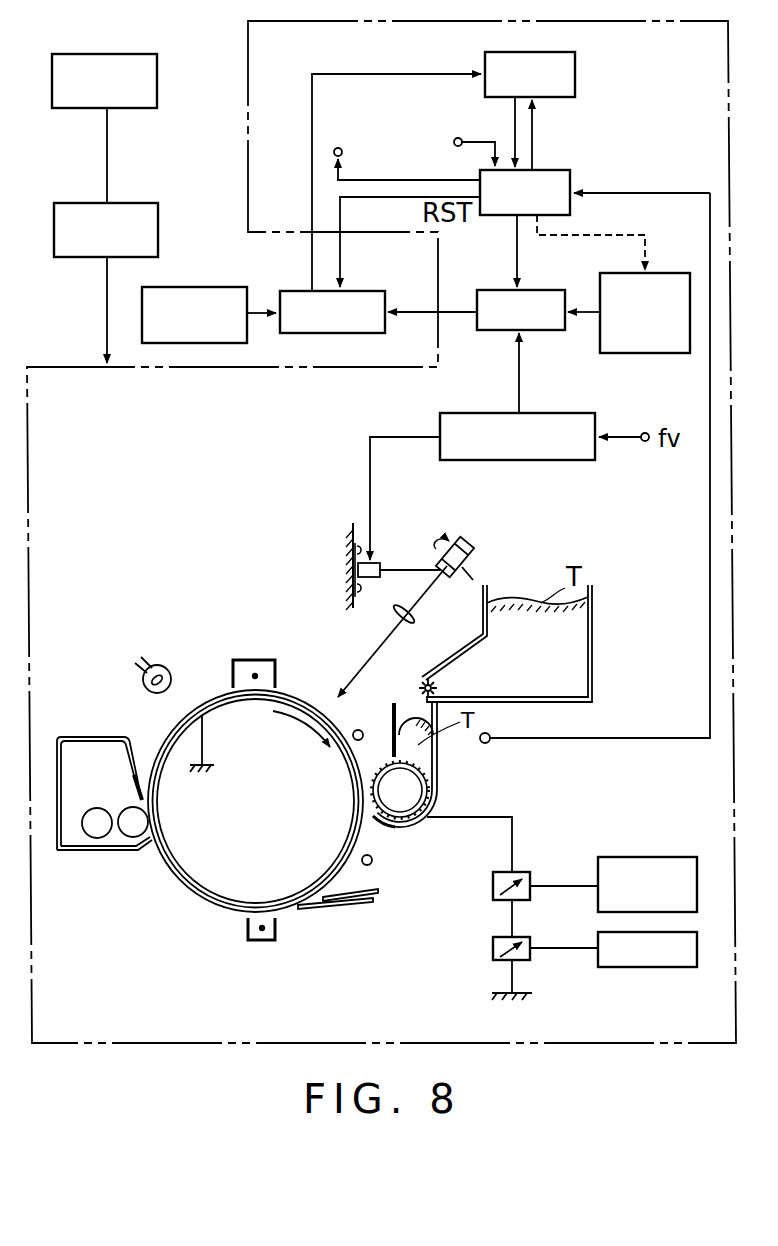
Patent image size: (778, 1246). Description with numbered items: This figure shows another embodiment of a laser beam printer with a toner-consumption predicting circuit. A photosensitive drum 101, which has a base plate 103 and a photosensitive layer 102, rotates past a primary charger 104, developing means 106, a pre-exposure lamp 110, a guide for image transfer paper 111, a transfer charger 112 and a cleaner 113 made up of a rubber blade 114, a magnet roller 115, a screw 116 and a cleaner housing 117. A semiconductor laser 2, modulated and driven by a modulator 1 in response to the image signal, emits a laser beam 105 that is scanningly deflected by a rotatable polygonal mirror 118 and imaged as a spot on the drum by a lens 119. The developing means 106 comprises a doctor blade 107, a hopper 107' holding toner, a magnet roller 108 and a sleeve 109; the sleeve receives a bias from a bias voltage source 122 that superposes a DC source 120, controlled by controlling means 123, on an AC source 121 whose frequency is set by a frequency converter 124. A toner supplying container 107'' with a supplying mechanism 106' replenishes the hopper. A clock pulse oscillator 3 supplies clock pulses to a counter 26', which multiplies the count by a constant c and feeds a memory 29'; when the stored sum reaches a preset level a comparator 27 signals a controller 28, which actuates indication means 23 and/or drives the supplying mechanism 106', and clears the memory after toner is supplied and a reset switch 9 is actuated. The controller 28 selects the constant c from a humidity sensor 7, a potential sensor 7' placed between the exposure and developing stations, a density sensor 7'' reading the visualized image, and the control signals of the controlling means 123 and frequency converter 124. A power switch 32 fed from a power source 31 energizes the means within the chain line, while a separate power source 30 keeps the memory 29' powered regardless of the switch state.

The modulator 1 is at (550, 398).
The semiconductor laser 2 is at (378, 563).
The clock pulse oscillator 3 is at (665, 273).
The humidity sensor 7 is at (512, 723).
The potential sensor 7' is at (336, 767).
The density sensor 7'' is at (394, 879).
The reset switch 9 is at (456, 138).
The indication means 23 is at (340, 146).
The counter 26' is at (540, 289).
The comparator 27 is at (577, 58).
The controller 28 is at (560, 170).
The memory 29' is at (348, 286).
The power source 30 is at (197, 287).
The power source 31 is at (130, 54).
The power switch 32 is at (130, 203).
The photosensitive drum 101 is at (218, 691).
The photoconductive layer 102 is at (292, 693).
The base plate 103 is at (310, 701).
The primary charger 104 is at (255, 660).
The laser beam 105 is at (378, 650).
The developing means 106 is at (453, 791).
The supplying mechanism 106' is at (476, 681).
The doctor blade 107 is at (381, 718).
The hopper 107' is at (454, 765).
The toner supplying container 107'' is at (555, 643).
The magnet roller 108 is at (400, 805).
The sleeve 109 is at (418, 828).
The pre-exposure lamp 110 is at (167, 665).
The guide for image transfer paper 111 is at (380, 903).
The transfer charger 112 is at (260, 942).
The cleaner housing 113 is at (90, 735).
The rubber blade 114 is at (135, 792).
The magnet roller 115 is at (135, 837).
The screw 116 is at (97, 838).
The cleaner housing 117 is at (110, 809).
The rotatable polygonal mirror 118 is at (473, 547).
The lens 119 is at (415, 614).
The DC source 120 is at (541, 932).
The AC source 121 is at (527, 872).
The bias voltage source 122 is at (509, 893).
The controlling means 123 is at (660, 967).
The frequency converter 124 is at (647, 857).